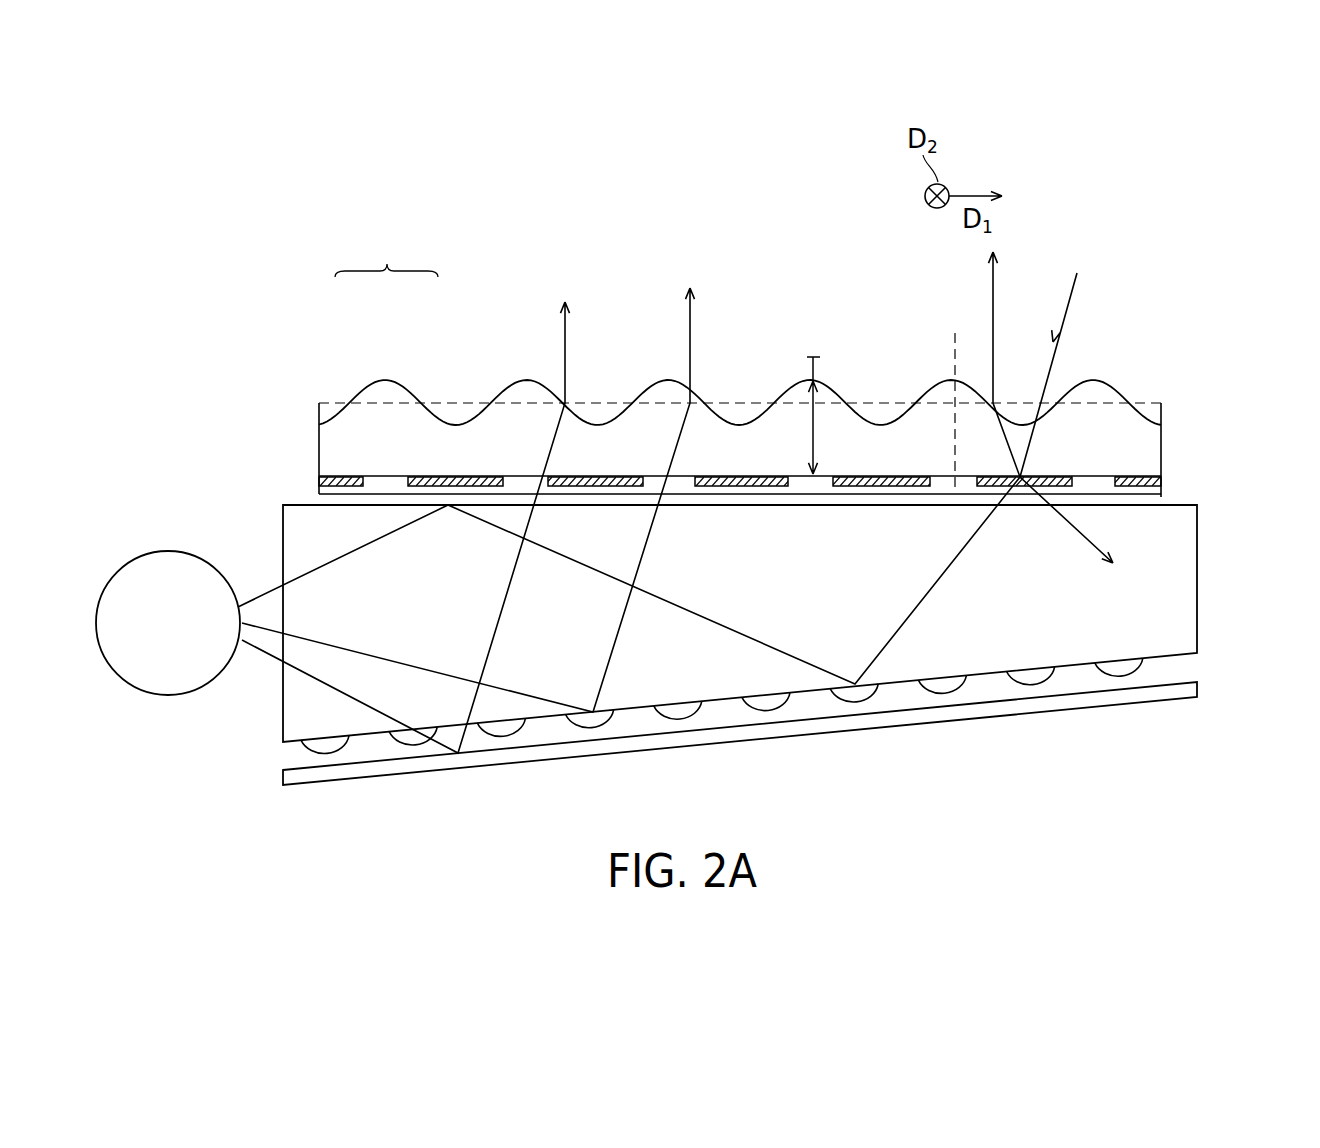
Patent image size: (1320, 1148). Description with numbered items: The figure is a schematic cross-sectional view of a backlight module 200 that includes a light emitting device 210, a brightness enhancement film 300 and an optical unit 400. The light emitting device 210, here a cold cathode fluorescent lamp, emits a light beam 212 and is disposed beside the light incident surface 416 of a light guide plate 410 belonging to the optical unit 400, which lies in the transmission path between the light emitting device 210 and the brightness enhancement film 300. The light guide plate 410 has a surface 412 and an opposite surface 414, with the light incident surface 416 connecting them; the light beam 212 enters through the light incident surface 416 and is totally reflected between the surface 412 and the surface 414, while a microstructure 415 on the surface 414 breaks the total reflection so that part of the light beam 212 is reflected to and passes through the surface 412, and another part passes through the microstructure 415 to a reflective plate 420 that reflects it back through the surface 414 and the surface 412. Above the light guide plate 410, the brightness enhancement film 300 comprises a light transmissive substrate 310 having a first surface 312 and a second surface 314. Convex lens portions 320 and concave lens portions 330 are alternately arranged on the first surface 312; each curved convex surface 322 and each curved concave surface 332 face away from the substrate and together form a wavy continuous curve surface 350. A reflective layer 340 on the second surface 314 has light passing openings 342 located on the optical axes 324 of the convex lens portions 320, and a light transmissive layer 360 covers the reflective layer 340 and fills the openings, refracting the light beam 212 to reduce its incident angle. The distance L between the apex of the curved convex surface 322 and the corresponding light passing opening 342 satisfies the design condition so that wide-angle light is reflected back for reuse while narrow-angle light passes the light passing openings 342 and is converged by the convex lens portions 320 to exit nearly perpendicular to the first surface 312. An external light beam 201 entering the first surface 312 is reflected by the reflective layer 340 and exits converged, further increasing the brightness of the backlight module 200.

The backlight module 200 is at (1207, 797).
The external light beam 201 is at (1067, 308).
The light emitting device 210 is at (165, 668).
The light beam 212 is at (303, 633).
The brightness enhancement film 300 is at (728, 368).
The light transmissive substrate 310 is at (335, 449).
The first surface 312 is at (1019, 400).
The second surface 314 is at (1080, 493).
The convex lens portions 320 is at (525, 390).
The curved convex surface 322 is at (381, 367).
The optical axes 324 is at (957, 360).
The concave lens portions 330 is at (470, 417).
The curved concave surface 332 is at (447, 410).
The reflective layer 340 is at (905, 478).
The light passing openings 342 is at (790, 484).
The wavy continuous curve surface 350 is at (386, 252).
The light transmissive layer 360 is at (328, 490).
The optical unit 400 is at (759, 661).
The light guide plate 410 is at (1177, 608).
The surface 412 is at (1185, 504).
The surface 414 is at (1184, 669).
The microstructure 415 is at (857, 698).
The light incident surface 416 is at (266, 702).
The reflective plate 420 is at (1168, 693).
The distance L is at (815, 435).